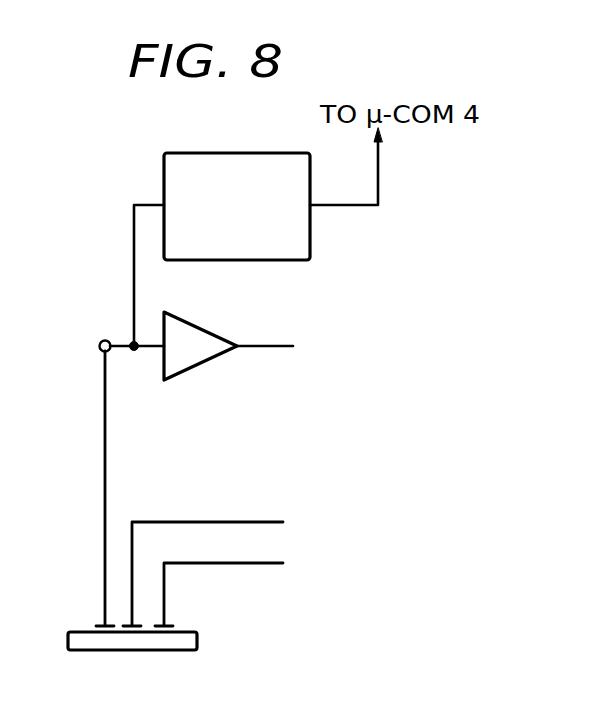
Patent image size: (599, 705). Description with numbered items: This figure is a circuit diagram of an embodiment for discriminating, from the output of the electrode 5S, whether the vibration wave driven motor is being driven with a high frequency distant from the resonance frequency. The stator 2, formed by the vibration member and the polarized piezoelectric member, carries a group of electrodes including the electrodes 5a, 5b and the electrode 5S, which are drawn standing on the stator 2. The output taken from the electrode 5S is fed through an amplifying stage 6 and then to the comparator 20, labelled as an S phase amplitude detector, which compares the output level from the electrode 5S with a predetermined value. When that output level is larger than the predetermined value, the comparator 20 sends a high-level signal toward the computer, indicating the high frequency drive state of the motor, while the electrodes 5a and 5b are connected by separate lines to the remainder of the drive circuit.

The comparator 20 is at (185, 149).
The pulse interval measuring device 6 is at (201, 325).
The electrode 5S is at (102, 624).
The electrode 5a is at (137, 624).
The electrode 5b is at (167, 624).
The stator 2 is at (188, 635).